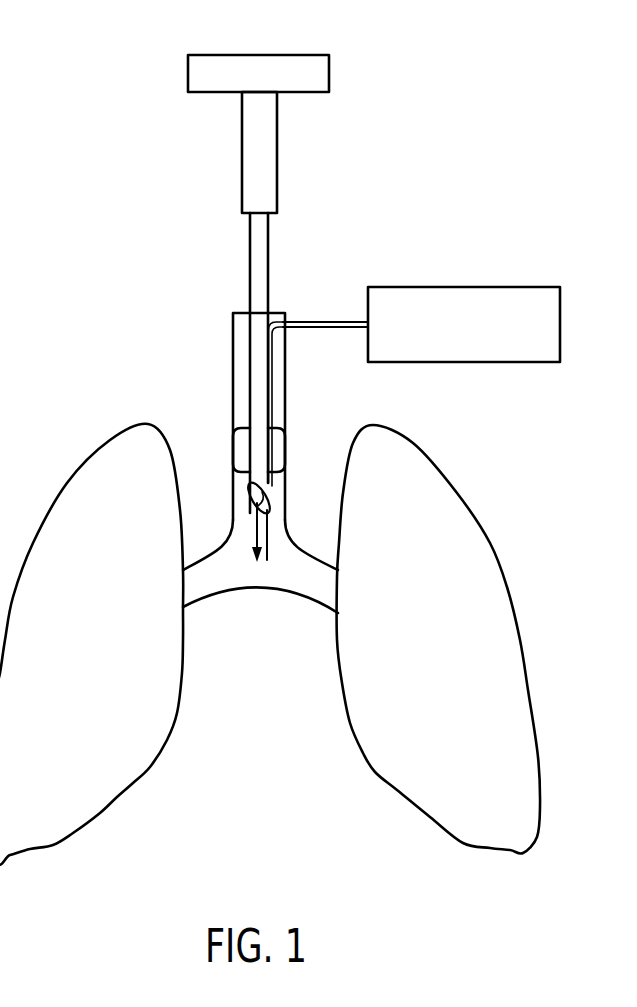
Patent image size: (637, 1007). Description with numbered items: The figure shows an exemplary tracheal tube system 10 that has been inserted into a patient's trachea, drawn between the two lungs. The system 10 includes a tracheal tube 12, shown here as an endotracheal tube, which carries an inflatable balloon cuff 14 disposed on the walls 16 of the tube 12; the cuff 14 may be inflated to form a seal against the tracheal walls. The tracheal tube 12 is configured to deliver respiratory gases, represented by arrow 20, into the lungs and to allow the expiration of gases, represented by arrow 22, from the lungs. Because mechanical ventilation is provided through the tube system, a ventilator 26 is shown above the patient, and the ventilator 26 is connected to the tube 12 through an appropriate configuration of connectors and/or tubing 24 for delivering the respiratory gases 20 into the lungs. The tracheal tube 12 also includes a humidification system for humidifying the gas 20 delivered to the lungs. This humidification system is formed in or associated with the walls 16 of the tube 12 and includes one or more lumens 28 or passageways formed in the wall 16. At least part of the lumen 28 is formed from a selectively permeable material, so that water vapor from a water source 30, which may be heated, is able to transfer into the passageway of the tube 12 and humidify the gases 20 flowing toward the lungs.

The tracheal tube system 10 is at (66, 95).
The tracheal tube 12 is at (243, 376).
The inflatable balloon cuff 14 is at (240, 433).
The walls 16 is at (273, 372).
The arrow representing respiratory gases 20 is at (268, 346).
The arrow representing expired gases 22 is at (268, 528).
The tubing 24 is at (277, 157).
The ventilator 26 is at (258, 54).
The lumen 28 is at (300, 320).
The water source 30 is at (463, 362).